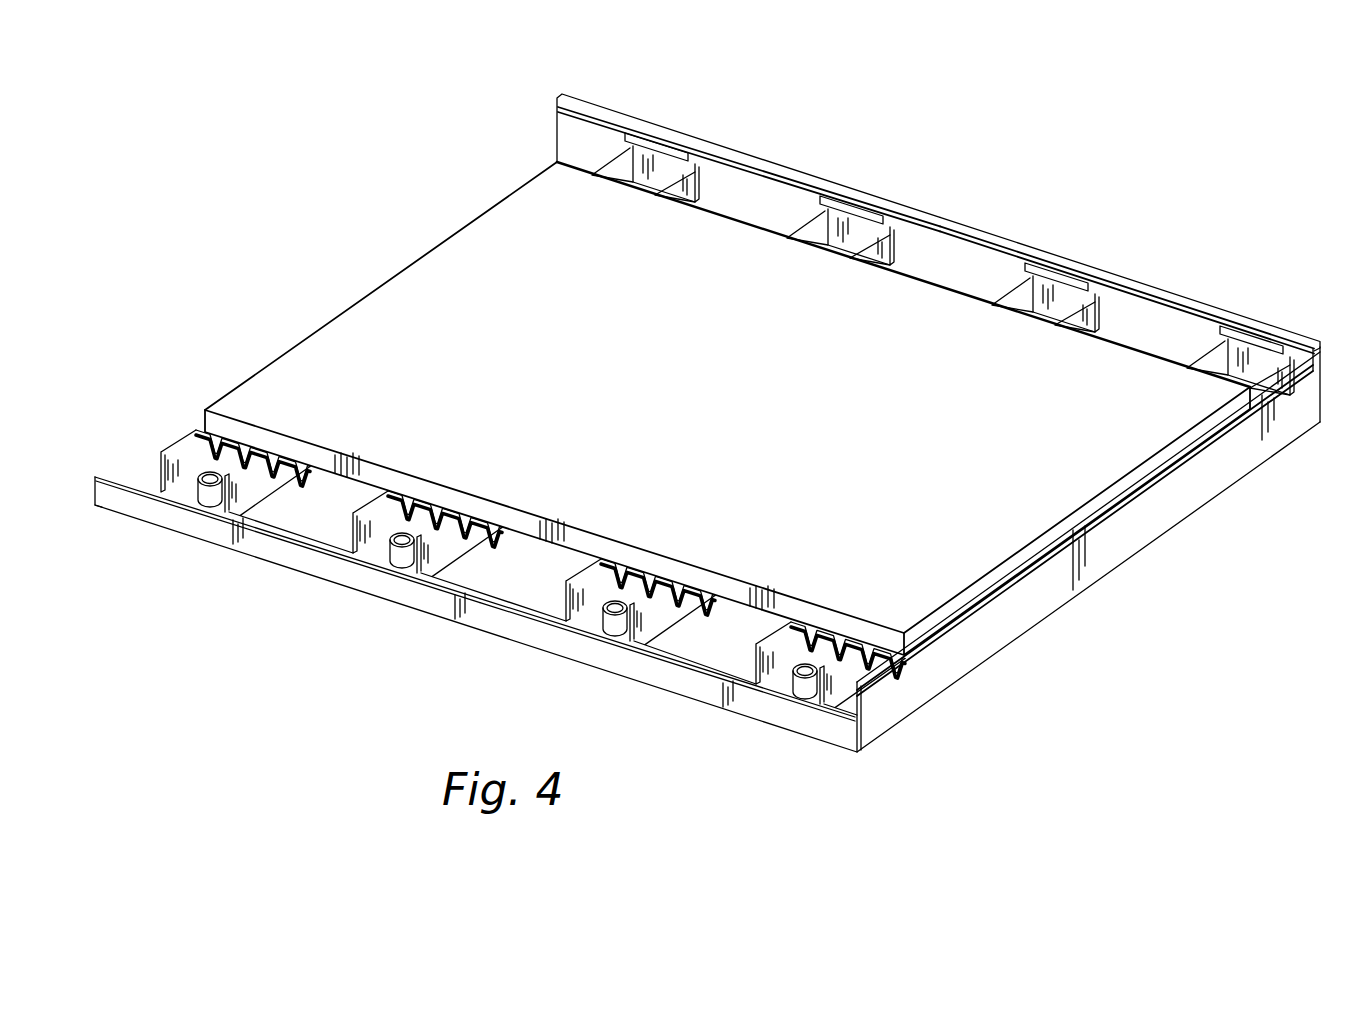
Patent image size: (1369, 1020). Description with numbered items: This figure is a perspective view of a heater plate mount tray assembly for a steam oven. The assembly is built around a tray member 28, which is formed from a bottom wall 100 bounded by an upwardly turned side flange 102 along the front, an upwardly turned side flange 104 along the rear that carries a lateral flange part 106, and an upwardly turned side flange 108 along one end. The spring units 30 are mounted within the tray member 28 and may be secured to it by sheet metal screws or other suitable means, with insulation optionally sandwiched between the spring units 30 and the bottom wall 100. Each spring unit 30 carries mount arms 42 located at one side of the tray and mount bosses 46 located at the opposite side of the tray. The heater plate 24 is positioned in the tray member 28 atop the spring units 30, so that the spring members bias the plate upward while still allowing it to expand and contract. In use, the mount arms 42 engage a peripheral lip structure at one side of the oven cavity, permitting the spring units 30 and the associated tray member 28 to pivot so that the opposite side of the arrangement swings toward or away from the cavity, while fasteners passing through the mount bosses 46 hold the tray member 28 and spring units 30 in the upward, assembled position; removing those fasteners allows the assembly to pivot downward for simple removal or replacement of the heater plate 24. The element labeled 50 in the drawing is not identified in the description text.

The heater plate 24 is at (407, 287).
The tray member 28 is at (1036, 632).
The spring unit 30 is at (290, 512).
The mount arm 42 is at (650, 145).
The mount boss 46 is at (206, 490).
The serrations 50 is at (232, 452).
The bottom wall 100 is at (718, 641).
The upwardly turned side flange 102 is at (333, 572).
The upwardly turned side flange 104 is at (568, 140).
The lateral flange part 106 is at (963, 226).
The upwardly turned side flange 108 is at (1143, 512).